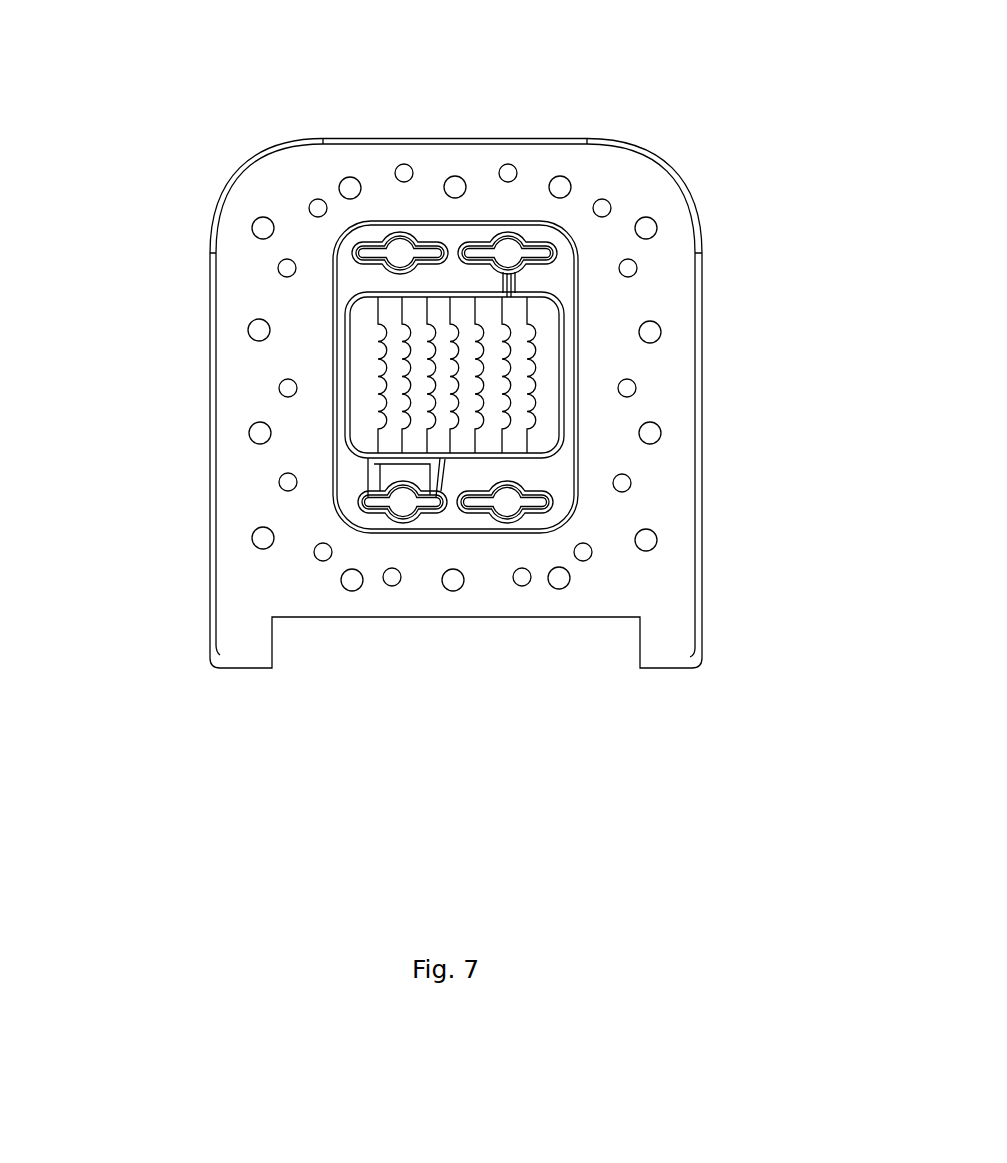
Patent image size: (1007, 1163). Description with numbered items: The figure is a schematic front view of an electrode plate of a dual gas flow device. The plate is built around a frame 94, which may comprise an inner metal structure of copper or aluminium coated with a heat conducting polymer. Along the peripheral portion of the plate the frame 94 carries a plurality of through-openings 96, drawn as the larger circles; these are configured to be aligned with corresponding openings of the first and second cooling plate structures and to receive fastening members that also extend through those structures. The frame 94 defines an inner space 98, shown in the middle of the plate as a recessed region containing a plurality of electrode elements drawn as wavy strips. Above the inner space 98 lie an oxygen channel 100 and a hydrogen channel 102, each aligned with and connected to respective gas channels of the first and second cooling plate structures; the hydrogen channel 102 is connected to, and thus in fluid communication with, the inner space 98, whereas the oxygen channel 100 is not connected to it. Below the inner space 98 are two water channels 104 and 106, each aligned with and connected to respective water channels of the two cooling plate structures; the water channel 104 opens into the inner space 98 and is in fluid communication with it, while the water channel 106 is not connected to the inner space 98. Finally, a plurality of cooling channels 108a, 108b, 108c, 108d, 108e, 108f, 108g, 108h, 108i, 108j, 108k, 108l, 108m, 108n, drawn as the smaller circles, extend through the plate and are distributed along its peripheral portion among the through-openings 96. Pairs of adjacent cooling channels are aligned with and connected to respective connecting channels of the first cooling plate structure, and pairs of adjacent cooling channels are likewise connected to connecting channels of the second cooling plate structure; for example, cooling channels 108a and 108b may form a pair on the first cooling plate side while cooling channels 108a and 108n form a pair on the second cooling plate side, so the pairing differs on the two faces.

The frame 94 is at (642, 148).
The through-openings 96 is at (402, 164).
The inner space 98 is at (376, 377).
The oxygen channel 100 is at (399, 247).
The hydrogen channel 102 is at (507, 248).
The water channel 104 is at (403, 508).
The water channel 106 is at (512, 502).
The cooling channel 108a is at (310, 203).
The cooling channel 108b is at (280, 275).
The cooling channel 108c is at (281, 394).
The cooling channel 108d is at (281, 489).
The cooling channel 108e is at (318, 561).
The cooling channel 108f is at (395, 586).
The cooling channel 108g is at (524, 586).
The cooling channel 108h is at (585, 561).
The cooling channel 108i is at (629, 490).
The cooling channel 108j is at (634, 392).
The cooling channel 108k is at (637, 271).
The cooling channel 108l is at (610, 204).
The cooling channel 108m is at (509, 164).
The cooling channel 108n is at (446, 179).